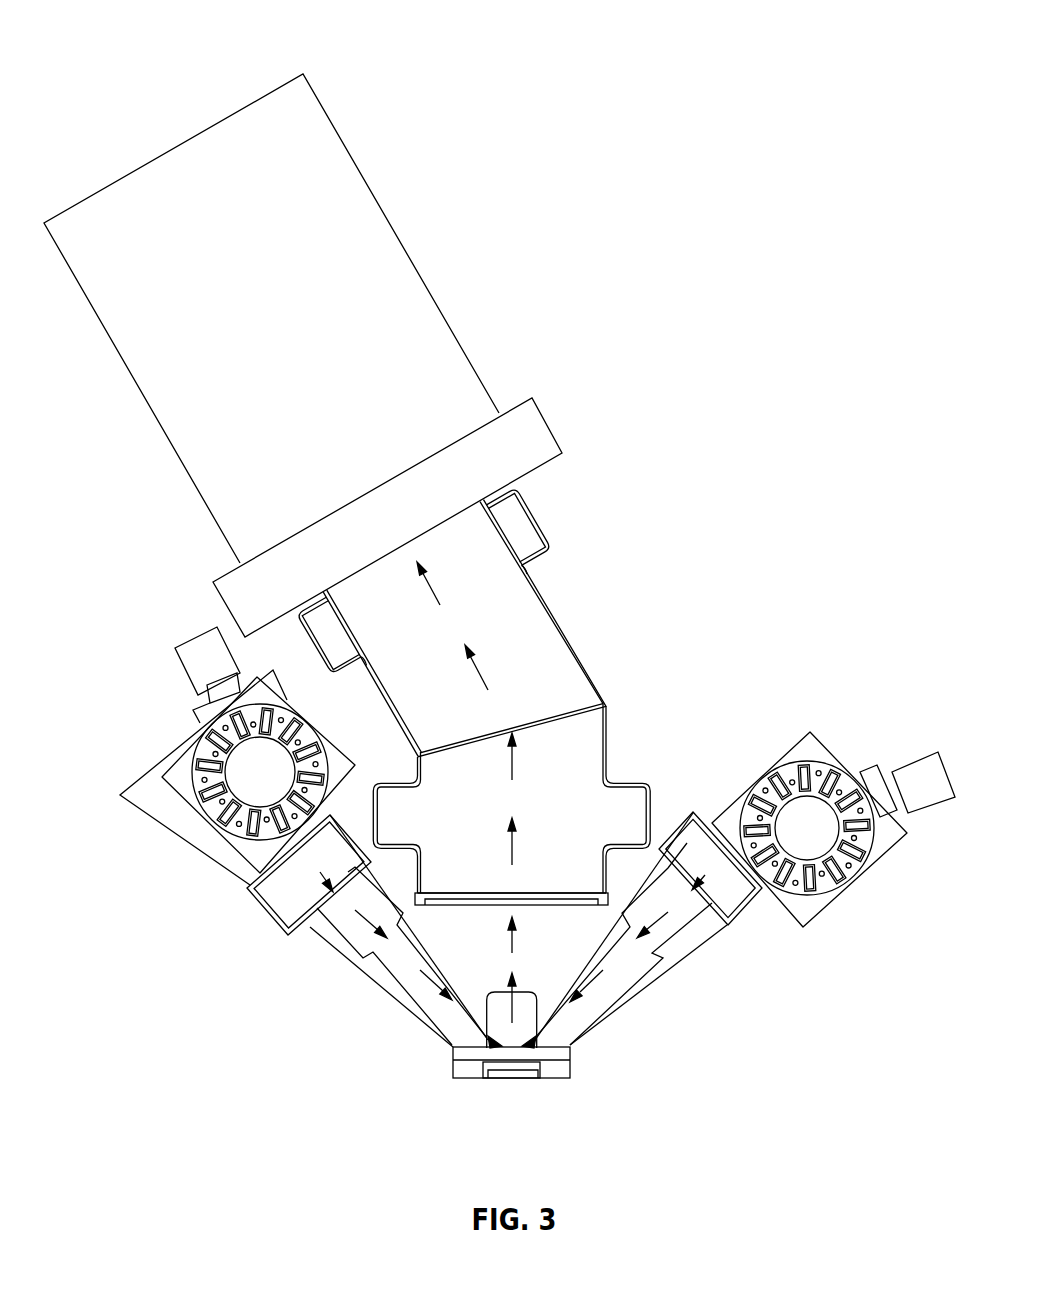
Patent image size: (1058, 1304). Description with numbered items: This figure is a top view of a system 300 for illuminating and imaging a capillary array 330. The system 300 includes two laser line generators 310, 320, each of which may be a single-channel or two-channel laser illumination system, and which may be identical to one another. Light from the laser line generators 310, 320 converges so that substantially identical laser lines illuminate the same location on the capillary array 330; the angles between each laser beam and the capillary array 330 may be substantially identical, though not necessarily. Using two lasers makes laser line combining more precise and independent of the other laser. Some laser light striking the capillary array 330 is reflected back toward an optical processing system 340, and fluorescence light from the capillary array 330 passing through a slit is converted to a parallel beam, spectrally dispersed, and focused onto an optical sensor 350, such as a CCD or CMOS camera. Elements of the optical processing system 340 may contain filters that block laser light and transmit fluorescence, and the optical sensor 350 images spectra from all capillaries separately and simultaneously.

The system 300 is at (446, 38).
The laser line generator 310 is at (103, 802).
The laser line generator 320 is at (773, 987).
The capillary array 330 is at (512, 1050).
The optical processing system 340 is at (565, 695).
The optical sensor 350 is at (289, 457).